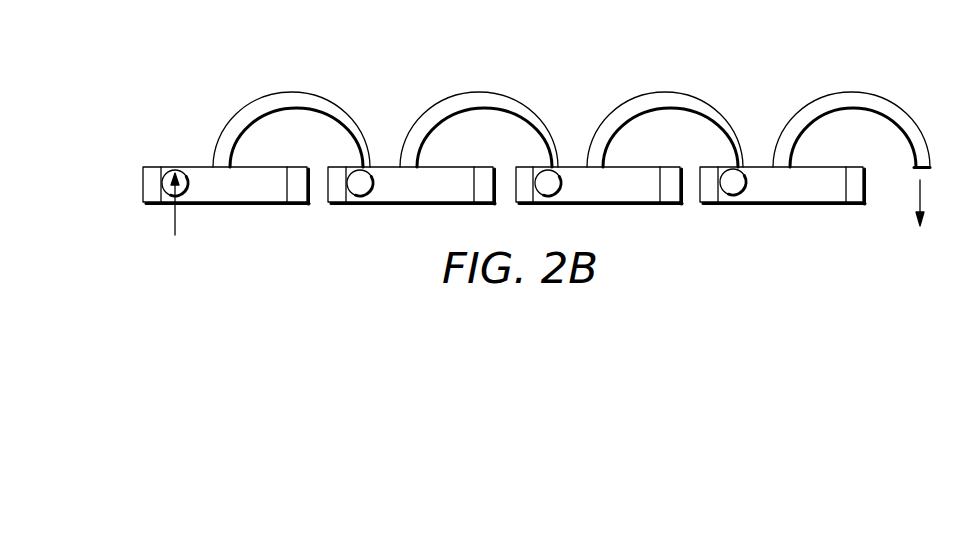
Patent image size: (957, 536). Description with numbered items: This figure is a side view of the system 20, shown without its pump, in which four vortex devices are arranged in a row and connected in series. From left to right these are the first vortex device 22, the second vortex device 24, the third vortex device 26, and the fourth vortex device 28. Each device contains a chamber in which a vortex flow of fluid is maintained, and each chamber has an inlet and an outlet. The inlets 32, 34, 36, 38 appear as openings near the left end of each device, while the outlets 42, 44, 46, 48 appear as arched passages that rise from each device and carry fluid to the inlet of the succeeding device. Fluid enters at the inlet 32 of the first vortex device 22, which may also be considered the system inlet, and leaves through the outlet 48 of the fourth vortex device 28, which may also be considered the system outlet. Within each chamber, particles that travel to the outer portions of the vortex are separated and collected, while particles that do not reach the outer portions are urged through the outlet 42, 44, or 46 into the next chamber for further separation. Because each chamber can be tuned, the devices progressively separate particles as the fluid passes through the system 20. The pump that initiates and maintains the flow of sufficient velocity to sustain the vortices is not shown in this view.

The system 20 is at (774, 61).
The first vortex device 22 is at (200, 205).
The second vortex device 24 is at (395, 205).
The third vortex device 26 is at (592, 205).
The fourth vortex device 28 is at (772, 205).
The inlet 32 is at (173, 173).
The inlet 34 is at (360, 177).
The inlet 36 is at (550, 177).
The inlet 38 is at (733, 177).
The outlet 42 is at (310, 93).
The outlet 44 is at (497, 93).
The outlet 46 is at (685, 93).
The outlet 48 is at (872, 93).